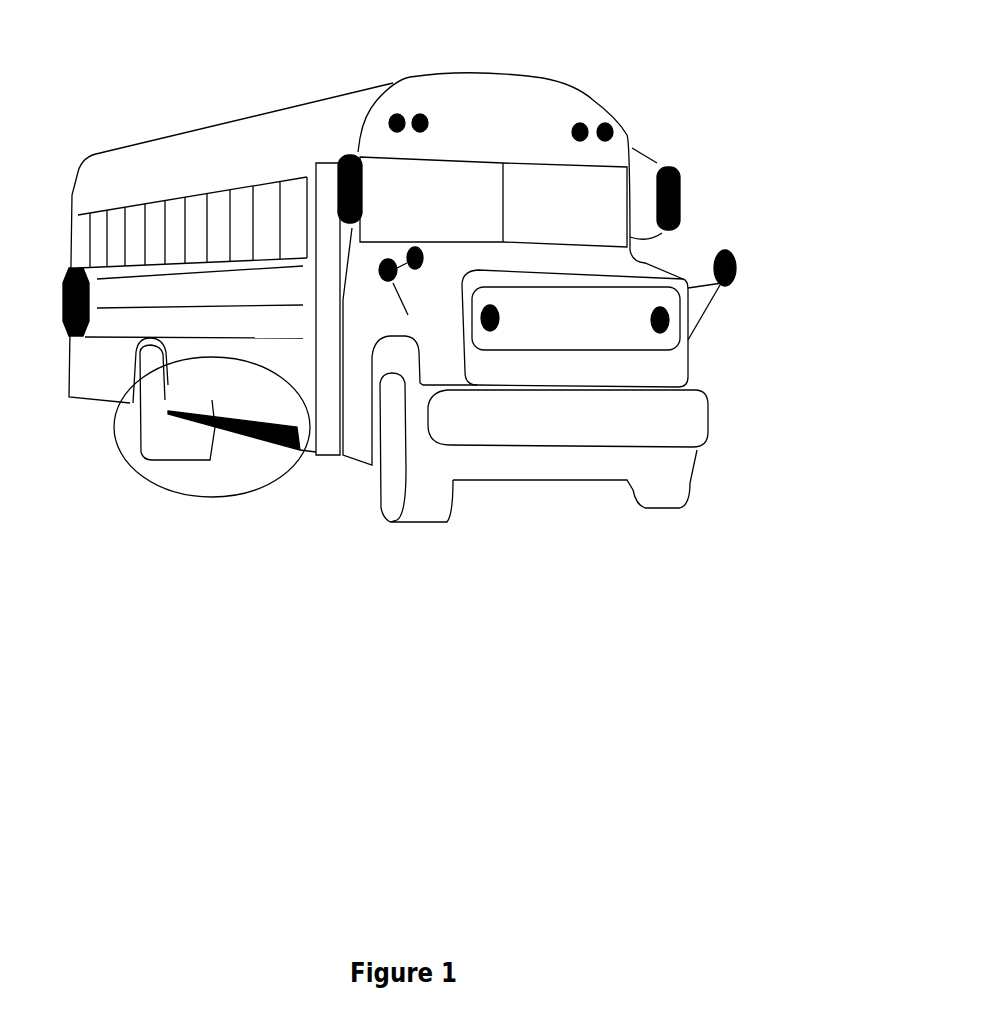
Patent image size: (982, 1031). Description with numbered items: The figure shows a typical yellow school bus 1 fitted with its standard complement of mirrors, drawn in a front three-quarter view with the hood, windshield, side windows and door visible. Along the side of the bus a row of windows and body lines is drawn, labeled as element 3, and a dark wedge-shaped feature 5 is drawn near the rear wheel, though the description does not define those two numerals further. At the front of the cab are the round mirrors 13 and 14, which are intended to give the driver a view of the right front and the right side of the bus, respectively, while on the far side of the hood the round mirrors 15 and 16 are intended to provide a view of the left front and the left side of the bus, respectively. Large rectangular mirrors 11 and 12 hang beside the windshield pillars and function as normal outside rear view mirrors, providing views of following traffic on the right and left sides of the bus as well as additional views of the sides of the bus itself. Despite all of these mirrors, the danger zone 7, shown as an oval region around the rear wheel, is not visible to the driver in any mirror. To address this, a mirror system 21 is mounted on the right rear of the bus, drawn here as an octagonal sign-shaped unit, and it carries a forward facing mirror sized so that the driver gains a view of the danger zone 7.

The school bus 1 is at (583, 91).
The bus body side 3 is at (246, 253).
The stop arm 5 is at (172, 401).
The danger zone 7 is at (253, 496).
The large rectangular mirror 11 is at (370, 179).
The large rectangular mirror 12 is at (690, 191).
The round mirror 13 is at (433, 254).
The round mirror 14 is at (410, 281).
The round mirror 15 is at (748, 271).
The round mirror 16 is at (747, 287).
The mirror system 21 is at (77, 253).